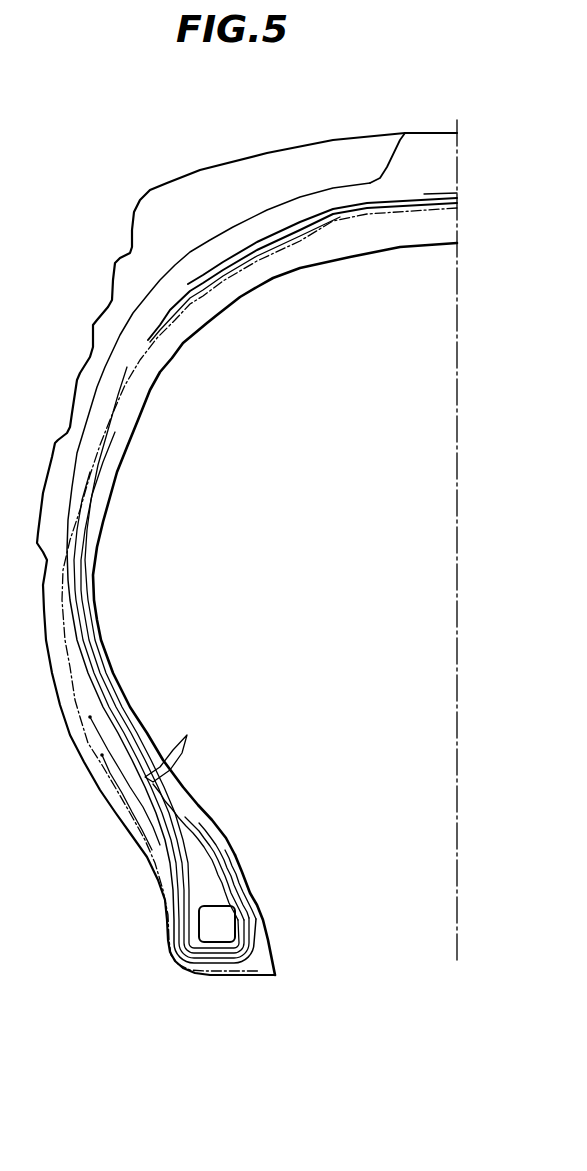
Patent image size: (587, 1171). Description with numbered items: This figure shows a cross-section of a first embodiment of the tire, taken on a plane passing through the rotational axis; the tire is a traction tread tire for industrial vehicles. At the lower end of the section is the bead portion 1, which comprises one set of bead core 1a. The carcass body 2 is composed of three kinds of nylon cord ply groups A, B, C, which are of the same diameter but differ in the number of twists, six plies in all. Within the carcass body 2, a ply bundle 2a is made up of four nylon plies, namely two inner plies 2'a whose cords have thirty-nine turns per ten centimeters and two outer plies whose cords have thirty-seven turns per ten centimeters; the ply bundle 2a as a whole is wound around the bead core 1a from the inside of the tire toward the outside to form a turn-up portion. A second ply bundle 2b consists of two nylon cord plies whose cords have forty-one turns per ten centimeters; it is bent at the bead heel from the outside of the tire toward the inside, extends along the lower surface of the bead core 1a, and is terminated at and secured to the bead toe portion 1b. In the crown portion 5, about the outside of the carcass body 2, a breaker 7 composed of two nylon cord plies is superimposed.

The crown portion 5 is at (348, 153).
The breaker 7 is at (424, 194).
The nylon cord ply group C is at (131, 371).
The nylon cord ply group A is at (119, 437).
The nylon cord ply group B is at (93, 477).
The carcass body 2 is at (218, 573).
The ply bundle 2a is at (191, 813).
The inner plies 2'a is at (260, 865).
The ply bundle 2b is at (108, 782).
The bead portion 1 is at (249, 893).
The bead core 1a is at (217, 930).
The bead toe portion 1b is at (261, 955).